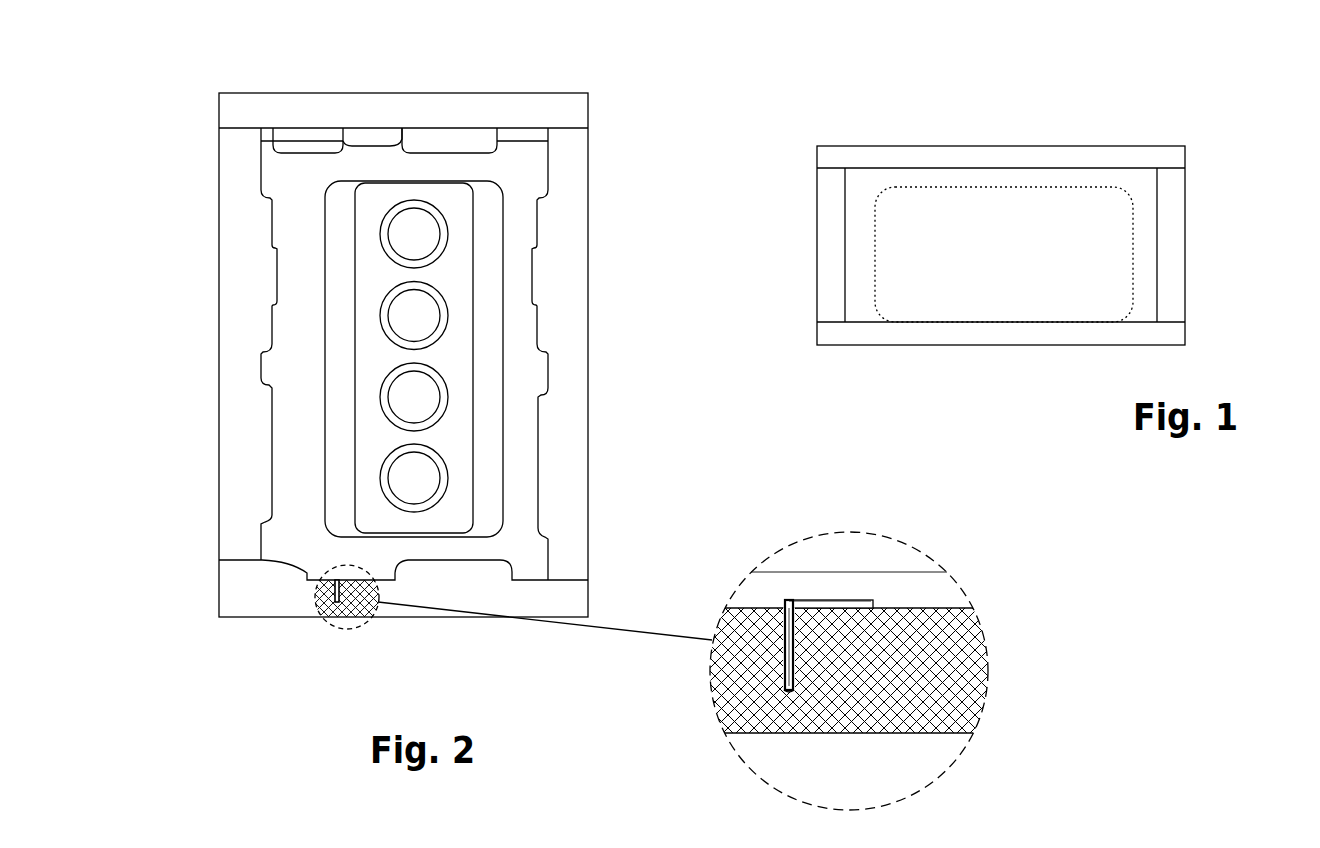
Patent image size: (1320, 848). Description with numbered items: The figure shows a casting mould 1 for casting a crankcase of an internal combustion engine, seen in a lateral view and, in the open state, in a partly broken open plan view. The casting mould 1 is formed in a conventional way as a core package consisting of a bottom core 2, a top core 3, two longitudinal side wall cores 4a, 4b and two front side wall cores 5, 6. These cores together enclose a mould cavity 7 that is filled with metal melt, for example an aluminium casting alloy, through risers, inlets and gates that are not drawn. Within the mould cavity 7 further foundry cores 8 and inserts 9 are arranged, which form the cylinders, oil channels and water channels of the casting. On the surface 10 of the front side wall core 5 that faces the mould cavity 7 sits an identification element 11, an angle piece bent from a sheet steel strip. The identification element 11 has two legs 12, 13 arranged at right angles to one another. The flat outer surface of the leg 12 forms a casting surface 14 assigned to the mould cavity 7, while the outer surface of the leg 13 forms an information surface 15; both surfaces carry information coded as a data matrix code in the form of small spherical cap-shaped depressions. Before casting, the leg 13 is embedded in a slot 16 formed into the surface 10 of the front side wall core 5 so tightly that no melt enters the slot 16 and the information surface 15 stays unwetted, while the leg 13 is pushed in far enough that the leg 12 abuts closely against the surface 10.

In FIG. 1, the casting mould 1 is at (1100, 120).
In FIG. 1, the bottom core 2 is at (988, 345).
In FIG. 1, the top core 3 is at (923, 158).
In FIG. 2, the longitudinal side wall core 4a is at (250, 398).
In FIG. 1, the longitudinal side wall core 4a is at (863, 187).
In FIG. 2, the longitudinal side wall core 4b is at (590, 428).
In FIG. 2, the front side wall core 5 is at (268, 608).
In FIG. 1, the front side wall core 5 is at (1183, 245).
In FIG. 2, the front side wall core 6 is at (320, 107).
In FIG. 1, the front side wall core 6 is at (830, 243).
In FIG. 2, the mould cavity 7 is at (527, 376).
In FIG. 2, the foundry cores 8 is at (367, 268).
In FIG. 2, the inserts 9 is at (440, 248).
In FIG. 2, the surface 10 is at (936, 600).
In FIG. 2, the identification element 11 is at (333, 576).
In FIG. 2, the leg 12 is at (857, 607).
In FIG. 2, the leg 13 is at (788, 677).
In FIG. 2, the casting surface 14 is at (829, 592).
In FIG. 2, the information surface 15 is at (770, 660).
In FIG. 2, the slot 16 is at (788, 689).